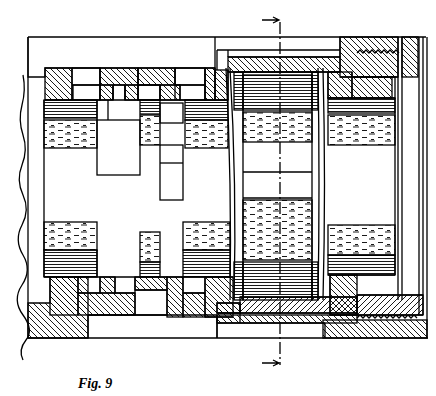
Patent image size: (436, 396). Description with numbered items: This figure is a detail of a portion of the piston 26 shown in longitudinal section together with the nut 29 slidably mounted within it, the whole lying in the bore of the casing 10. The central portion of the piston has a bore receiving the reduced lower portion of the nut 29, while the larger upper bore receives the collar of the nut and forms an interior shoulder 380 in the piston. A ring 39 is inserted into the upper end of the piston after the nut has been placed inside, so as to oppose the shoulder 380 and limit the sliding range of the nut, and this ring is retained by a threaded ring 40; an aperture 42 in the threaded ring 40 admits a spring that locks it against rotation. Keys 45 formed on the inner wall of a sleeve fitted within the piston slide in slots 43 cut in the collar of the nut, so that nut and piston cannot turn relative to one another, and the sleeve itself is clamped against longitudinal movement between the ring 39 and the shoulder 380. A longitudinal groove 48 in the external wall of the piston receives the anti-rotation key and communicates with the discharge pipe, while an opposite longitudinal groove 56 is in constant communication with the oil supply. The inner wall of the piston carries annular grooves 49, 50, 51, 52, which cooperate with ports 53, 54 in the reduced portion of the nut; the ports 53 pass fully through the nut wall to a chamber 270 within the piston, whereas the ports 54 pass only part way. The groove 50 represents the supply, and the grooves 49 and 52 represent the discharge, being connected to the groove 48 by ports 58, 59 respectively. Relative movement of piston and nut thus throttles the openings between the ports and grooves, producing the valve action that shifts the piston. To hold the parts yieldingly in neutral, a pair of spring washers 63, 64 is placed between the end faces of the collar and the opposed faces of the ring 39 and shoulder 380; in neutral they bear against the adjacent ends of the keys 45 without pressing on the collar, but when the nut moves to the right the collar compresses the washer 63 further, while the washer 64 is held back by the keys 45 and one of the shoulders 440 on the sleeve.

The longitudinal groove 48 is at (116, 52).
The interior shoulder 380 is at (213, 48).
The casing 10 is at (260, 192).
The shoulders on the sleeve 440 is at (270, 56).
The keys 45 is at (300, 67).
The aperture 42 is at (408, 45).
The port 59 is at (82, 74).
The annular groove 51 is at (118, 84).
The annular groove 50 is at (150, 88).
The port 58 is at (188, 76).
The annular groove 52 is at (86, 93).
The annular groove 49 is at (192, 93).
The ports 54 is at (108, 180).
The ports 53 is at (178, 120).
The nut 29 is at (50, 187).
The slots or keyways 43 is at (256, 180).
The spring washer 64 is at (237, 212).
The spring washer 63 is at (323, 207).
The piston 26 is at (197, 307).
The longitudinal groove 56 is at (98, 335).
The chamber 270 is at (41, 231).
The ring 39 is at (350, 302).
The threaded ring 40 is at (388, 302).